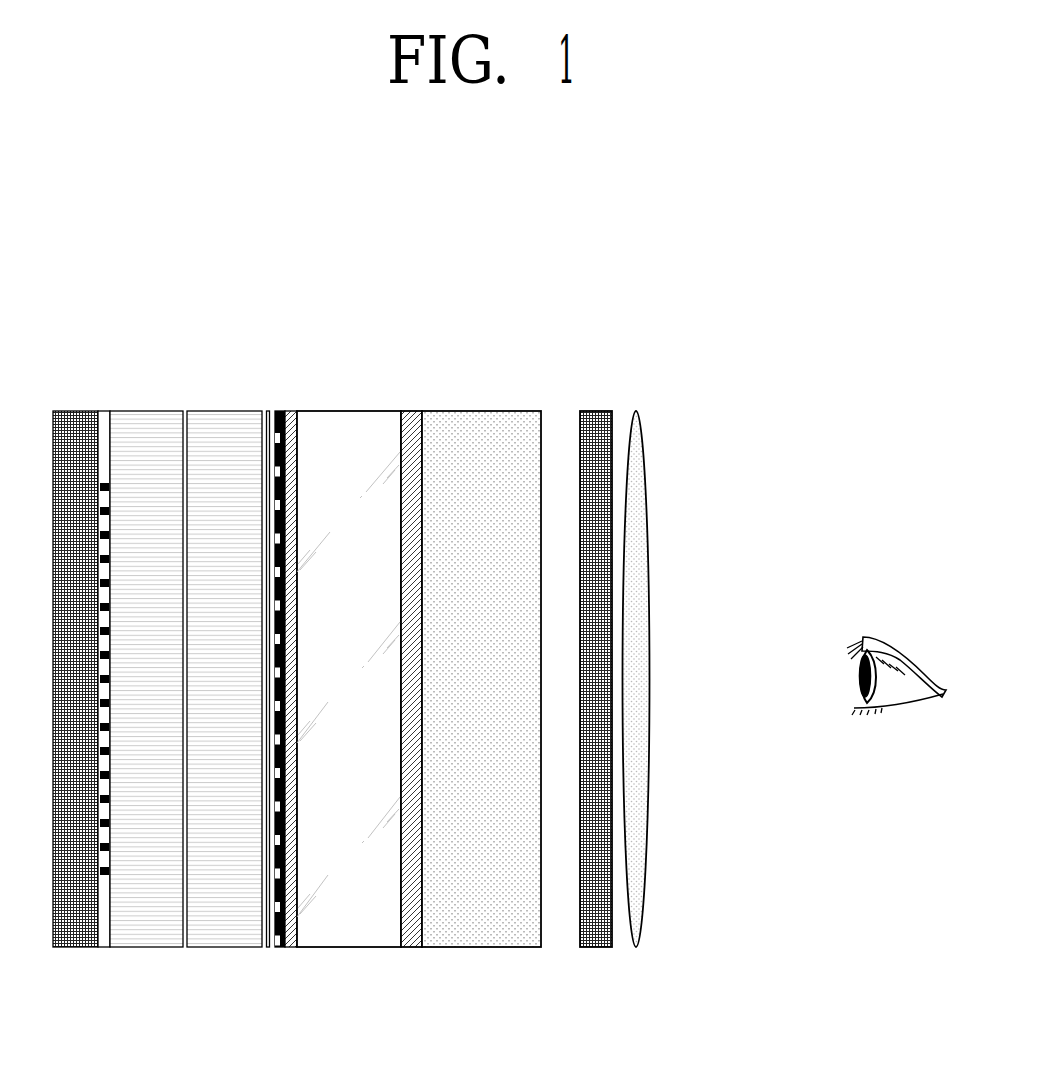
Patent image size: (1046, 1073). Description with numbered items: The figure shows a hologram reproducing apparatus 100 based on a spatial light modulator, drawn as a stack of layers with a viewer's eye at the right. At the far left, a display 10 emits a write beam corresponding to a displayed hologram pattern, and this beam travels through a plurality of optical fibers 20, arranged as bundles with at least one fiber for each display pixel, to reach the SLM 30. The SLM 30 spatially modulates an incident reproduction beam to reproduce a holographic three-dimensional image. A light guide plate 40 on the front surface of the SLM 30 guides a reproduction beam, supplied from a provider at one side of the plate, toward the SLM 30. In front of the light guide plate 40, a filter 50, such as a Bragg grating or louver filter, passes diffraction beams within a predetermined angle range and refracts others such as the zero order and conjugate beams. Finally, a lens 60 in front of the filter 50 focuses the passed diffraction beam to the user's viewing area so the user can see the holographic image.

The hologram reproducing apparatus 100 is at (346, 325).
The display 10 is at (53, 955).
The plurality of optical fibers 20 is at (264, 955).
The SLM 30 is at (402, 955).
The light guide plate 40 is at (541, 955).
The filter 50 is at (596, 947).
The lens 60 is at (636, 947).